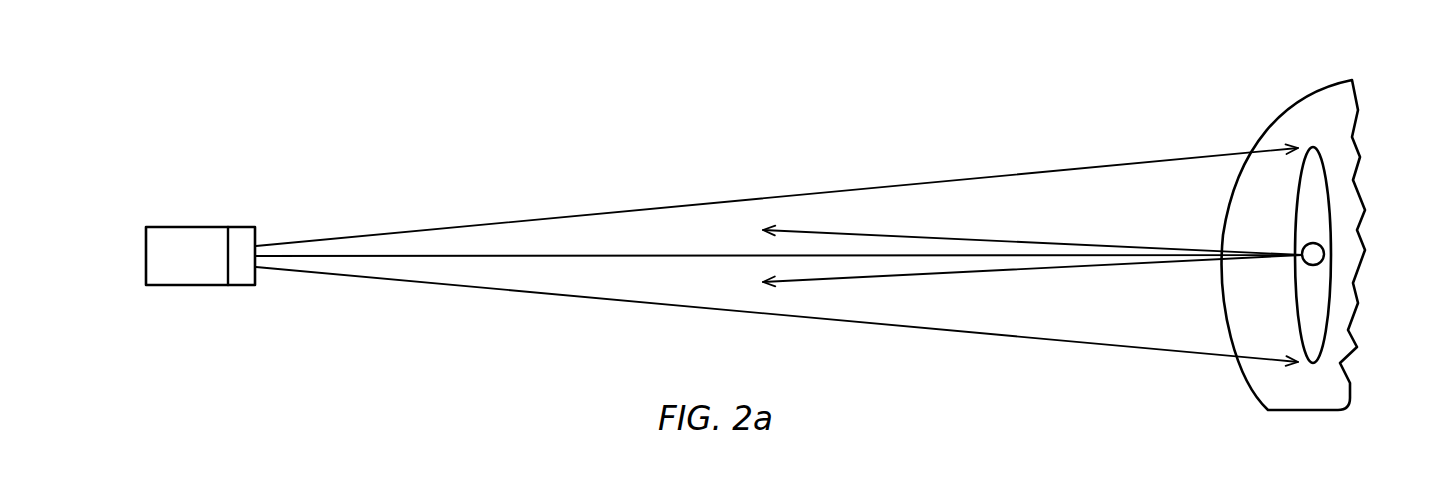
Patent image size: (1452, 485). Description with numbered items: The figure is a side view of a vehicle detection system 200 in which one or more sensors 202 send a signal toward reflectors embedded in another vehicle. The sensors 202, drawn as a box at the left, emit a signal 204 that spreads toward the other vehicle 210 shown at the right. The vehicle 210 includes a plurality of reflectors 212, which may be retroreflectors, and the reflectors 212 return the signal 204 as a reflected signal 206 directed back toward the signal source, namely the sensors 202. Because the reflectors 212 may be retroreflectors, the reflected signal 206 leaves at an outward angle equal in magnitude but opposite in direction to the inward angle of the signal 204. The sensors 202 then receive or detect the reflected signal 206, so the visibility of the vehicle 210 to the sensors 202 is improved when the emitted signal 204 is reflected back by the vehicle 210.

The vehicle detection system 200 is at (163, 147).
The sensor 202 is at (194, 226).
The signal 204 is at (321, 238).
The reflected signal 206 is at (1003, 241).
The vehicle 210 is at (1304, 96).
The reflectors 212 is at (1325, 254).